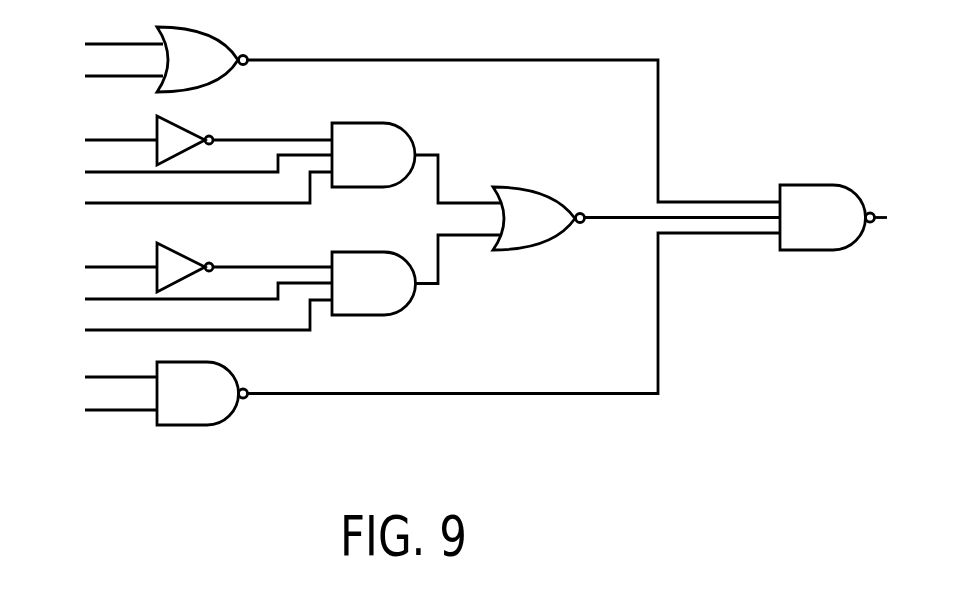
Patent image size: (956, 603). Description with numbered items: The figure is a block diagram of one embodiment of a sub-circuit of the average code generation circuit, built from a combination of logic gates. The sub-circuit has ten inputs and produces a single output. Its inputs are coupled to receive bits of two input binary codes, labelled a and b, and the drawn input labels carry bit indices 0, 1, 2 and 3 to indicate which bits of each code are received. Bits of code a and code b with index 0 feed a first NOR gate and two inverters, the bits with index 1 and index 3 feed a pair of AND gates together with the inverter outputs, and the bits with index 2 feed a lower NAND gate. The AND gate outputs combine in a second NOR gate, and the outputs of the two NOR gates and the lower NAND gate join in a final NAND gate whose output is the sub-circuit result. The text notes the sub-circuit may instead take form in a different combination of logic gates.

The input signals a0, b0 0 is at (97, 145).
The input signals a1, b1 1 is at (181, 249).
The input signals a2, b2 2 is at (94, 391).
The input signals a3, b3 3 is at (181, 245).